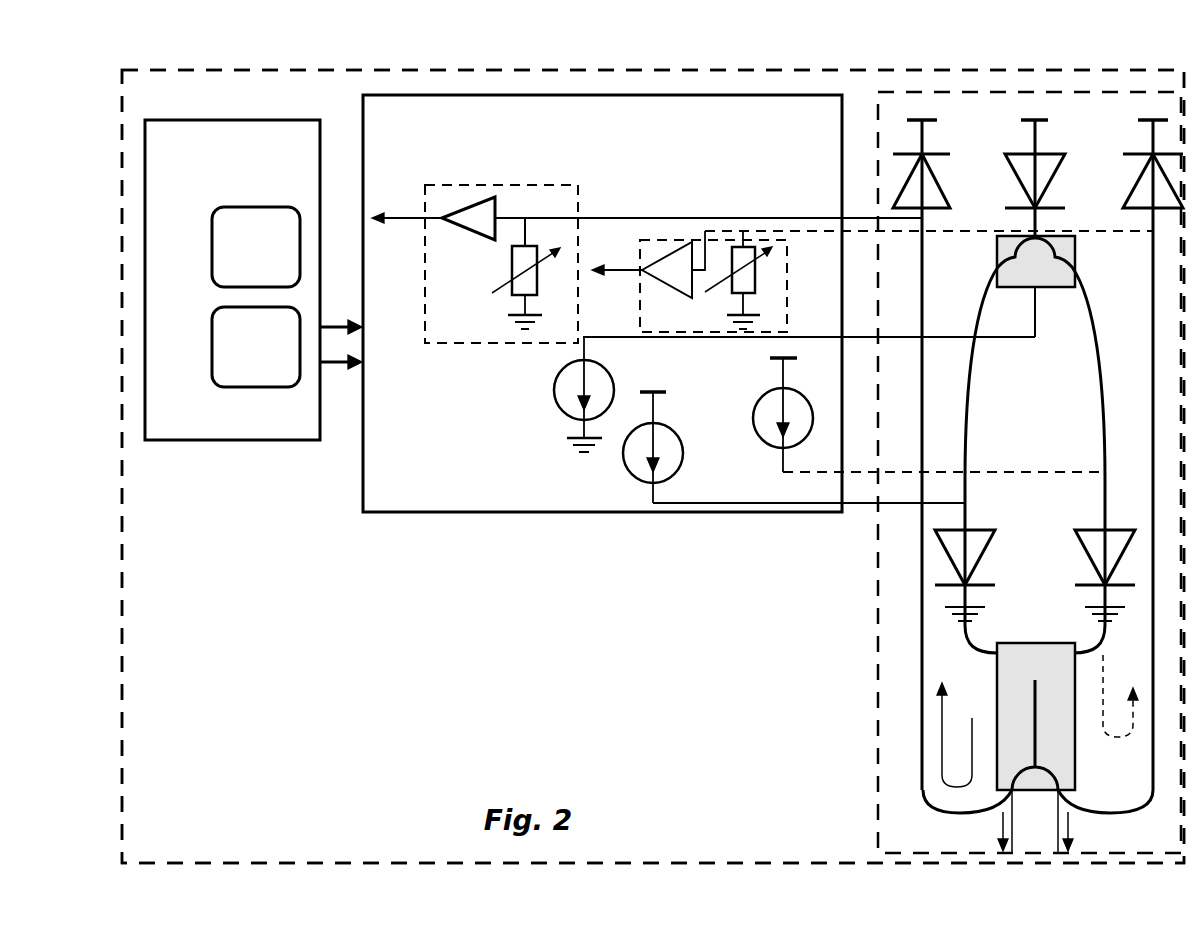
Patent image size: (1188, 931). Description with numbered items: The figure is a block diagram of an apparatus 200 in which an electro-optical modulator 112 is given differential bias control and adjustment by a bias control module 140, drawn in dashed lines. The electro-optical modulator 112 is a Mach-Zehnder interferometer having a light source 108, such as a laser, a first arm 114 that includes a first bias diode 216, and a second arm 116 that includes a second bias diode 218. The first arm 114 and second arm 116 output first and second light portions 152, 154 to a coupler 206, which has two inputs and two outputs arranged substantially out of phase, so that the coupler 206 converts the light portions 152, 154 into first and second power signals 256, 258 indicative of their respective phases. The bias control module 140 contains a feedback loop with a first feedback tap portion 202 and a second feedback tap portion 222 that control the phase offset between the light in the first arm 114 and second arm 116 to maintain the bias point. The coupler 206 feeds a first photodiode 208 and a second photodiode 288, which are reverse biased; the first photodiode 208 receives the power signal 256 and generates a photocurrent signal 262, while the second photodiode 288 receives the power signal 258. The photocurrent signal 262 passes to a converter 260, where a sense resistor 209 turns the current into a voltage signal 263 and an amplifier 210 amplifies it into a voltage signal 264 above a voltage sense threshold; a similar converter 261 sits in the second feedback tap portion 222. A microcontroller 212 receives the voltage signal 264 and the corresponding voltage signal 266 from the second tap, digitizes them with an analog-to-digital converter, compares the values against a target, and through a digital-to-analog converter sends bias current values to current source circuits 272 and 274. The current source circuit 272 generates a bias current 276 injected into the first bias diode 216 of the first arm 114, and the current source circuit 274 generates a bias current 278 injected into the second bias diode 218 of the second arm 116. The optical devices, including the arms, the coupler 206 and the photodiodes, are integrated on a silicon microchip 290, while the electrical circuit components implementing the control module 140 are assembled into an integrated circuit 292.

The apparatus 200 is at (644, 58).
The bias control module 140 is at (172, 506).
The microcontroller 212 is at (253, 280).
The integrated circuit 292 is at (780, 137).
The silicon microchip 290 is at (1143, 112).
The converter 260 is at (443, 338).
The converter 261 is at (650, 326).
The voltage signal 263 is at (508, 260).
The voltage signal 264 is at (402, 218).
The voltage signal 266 is at (617, 259).
The photocurrent signal 262 is at (676, 192).
The sense resistor 209 is at (530, 244).
The amplifier 210 is at (460, 229).
The current source circuit 272 is at (654, 415).
The current source circuit 274 is at (781, 386).
The bias current 276 is at (687, 489).
The bias current 278 is at (1010, 460).
The light source 108 is at (1038, 133).
The photodiode PD1 208 is at (944, 194).
The photodiode PD2 288 is at (1122, 210).
The electro-optical modulator 112 is at (1020, 361).
The first arm 114 is at (967, 410).
The second arm 116 is at (1103, 400).
The bias diode QBD1 216 is at (982, 547).
The bias diode QBD2 218 is at (1087, 545).
The first light portion 152 is at (1012, 631).
The second light portion 154 is at (1045, 631).
The first feedback tap portion 202 is at (962, 735).
The coupler 206 is at (1000, 731).
The second feedback tap portion 222 is at (1124, 696).
The first power signal 256 is at (979, 831).
The second power signal 258 is at (1094, 831).